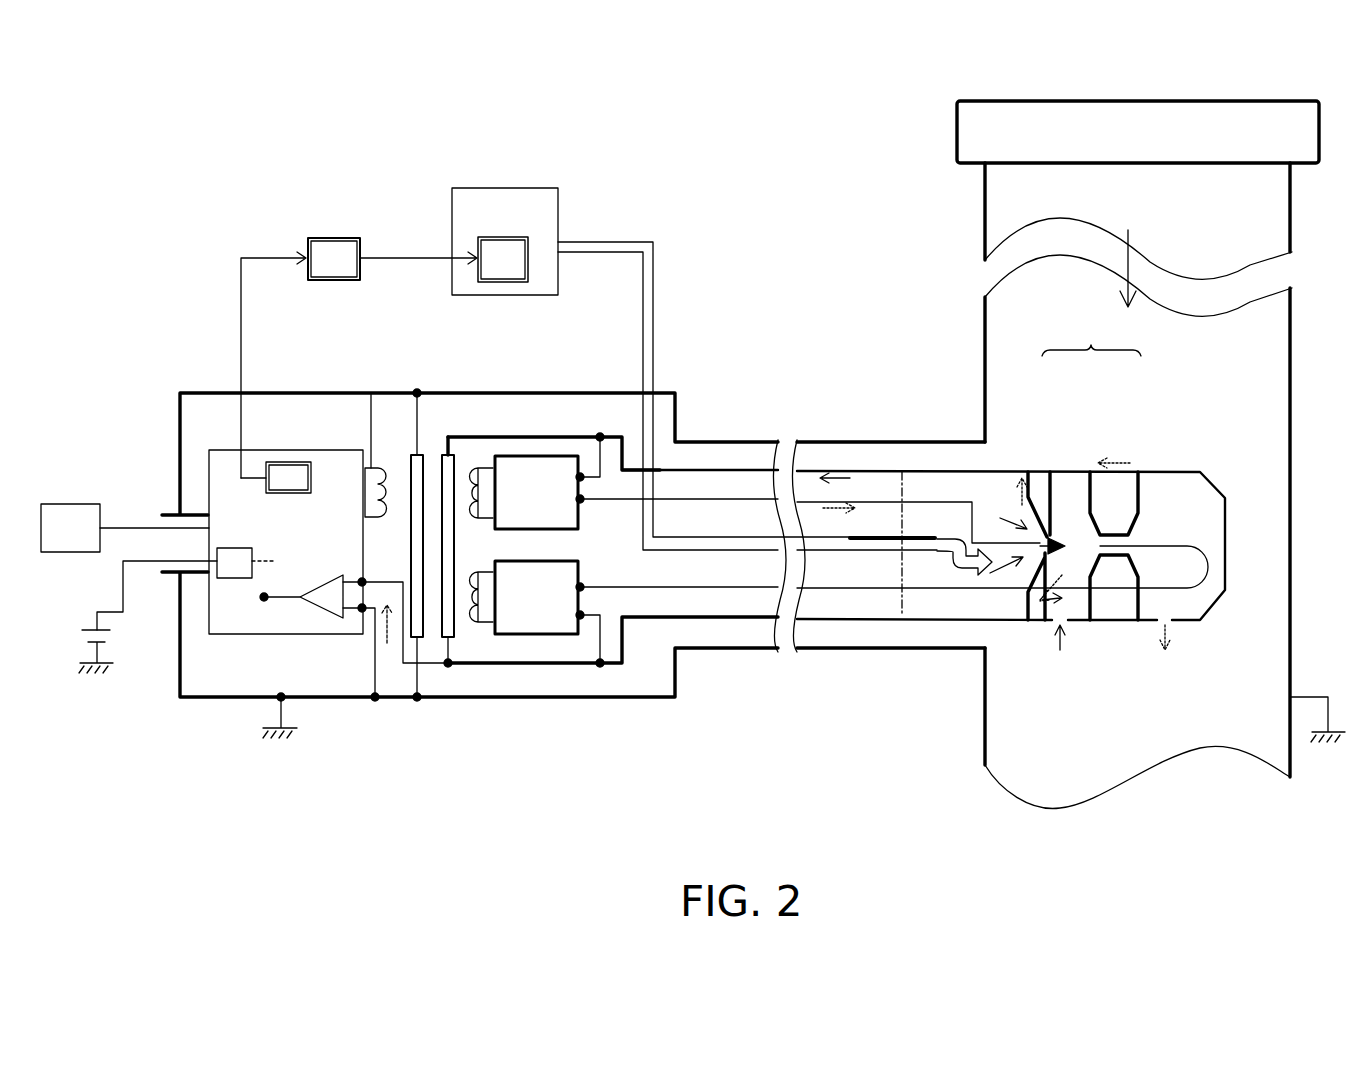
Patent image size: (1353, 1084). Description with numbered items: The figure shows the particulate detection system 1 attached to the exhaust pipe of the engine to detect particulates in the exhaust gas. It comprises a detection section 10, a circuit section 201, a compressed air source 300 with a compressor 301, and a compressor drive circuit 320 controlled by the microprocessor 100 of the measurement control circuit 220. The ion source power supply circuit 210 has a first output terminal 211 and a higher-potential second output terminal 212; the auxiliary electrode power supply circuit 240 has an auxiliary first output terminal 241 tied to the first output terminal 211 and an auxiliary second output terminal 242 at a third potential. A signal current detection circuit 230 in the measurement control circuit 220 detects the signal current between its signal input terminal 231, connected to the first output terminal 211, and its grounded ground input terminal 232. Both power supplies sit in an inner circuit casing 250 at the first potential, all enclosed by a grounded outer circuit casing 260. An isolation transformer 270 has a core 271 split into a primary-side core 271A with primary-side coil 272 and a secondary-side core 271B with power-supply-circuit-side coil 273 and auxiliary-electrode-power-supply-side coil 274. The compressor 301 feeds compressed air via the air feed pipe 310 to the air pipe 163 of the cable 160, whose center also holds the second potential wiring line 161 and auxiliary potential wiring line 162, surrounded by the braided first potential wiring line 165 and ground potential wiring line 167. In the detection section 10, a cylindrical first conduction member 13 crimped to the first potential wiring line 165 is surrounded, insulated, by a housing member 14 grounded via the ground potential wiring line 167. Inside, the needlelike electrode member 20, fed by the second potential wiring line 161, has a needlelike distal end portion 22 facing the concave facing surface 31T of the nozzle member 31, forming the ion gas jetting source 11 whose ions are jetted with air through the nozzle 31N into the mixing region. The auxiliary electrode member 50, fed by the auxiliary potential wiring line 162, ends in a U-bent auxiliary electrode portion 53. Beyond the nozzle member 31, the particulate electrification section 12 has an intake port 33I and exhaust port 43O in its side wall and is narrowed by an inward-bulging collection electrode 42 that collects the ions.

The particulate detection system 1 is at (188, 254).
The circuit section 201 is at (188, 410).
The measurement control circuit 220 is at (286, 542).
The microprocessor 100 is at (311, 484).
The signal current detection circuit 230 is at (331, 580).
The signal input terminal 231 is at (365, 582).
The ground input terminal 232 is at (361, 611).
The isolation transformer 270 is at (441, 410).
The core 271 is at (490, 790).
The primary-side core 271A is at (415, 643).
The secondary-side core 271B is at (452, 628).
The primary-side coil 272 is at (379, 466).
The power-supply-circuit-side coil 273 is at (478, 465).
The auxiliary-electrode-power-supply-side coil 274 is at (476, 575).
The inner circuit casing 250 is at (520, 435).
The ion source power supply circuit 210 is at (536, 492).
The first output terminal 211 is at (582, 477).
The second output terminal 212 is at (582, 500).
The auxiliary electrode power supply circuit 240 is at (536, 597).
The auxiliary first output terminal 241 is at (582, 615).
The auxiliary second output terminal 242 is at (582, 587).
The outer circuit casing 260 is at (578, 699).
The compressed air source 300 is at (505, 241).
The compressor 301 is at (503, 259).
The air feed pipe 310 is at (604, 240).
The compressor drive circuit 320 is at (300, 358).
The cable 160 is at (727, 420).
The second potential wiring line 161 is at (882, 469).
The auxiliary potential wiring line 162 is at (843, 590).
The air pipe 163 is at (677, 549).
The first potential wiring line 165 is at (741, 619).
The ground potential wiring line 167 is at (822, 441).
The needlelike electrode member 20 is at (880, 536).
The needlelike distal end portion 22 is at (933, 536).
The ion gas jetting source 11 is at (985, 548).
The nozzle member 31 is at (1037, 470).
The nozzle 31N is at (1053, 510).
The facing surface 31T is at (1040, 573).
The detection section 10 is at (1155, 448).
The particulate electrification section 12 is at (1141, 630).
The first conduction member 13 is at (925, 650).
The housing member 14 is at (931, 622).
The auxiliary electrode member 50 is at (933, 548).
The auxiliary electrode portion 53 is at (1160, 541).
The collection electrode 42 is at (1112, 611).
The intake port 33I is at (1069, 623).
The exhaust port 43O is at (1176, 624).